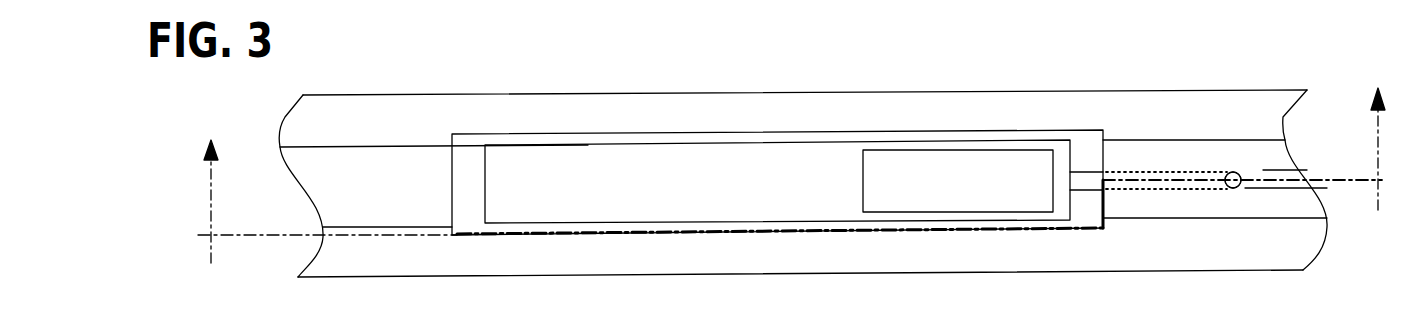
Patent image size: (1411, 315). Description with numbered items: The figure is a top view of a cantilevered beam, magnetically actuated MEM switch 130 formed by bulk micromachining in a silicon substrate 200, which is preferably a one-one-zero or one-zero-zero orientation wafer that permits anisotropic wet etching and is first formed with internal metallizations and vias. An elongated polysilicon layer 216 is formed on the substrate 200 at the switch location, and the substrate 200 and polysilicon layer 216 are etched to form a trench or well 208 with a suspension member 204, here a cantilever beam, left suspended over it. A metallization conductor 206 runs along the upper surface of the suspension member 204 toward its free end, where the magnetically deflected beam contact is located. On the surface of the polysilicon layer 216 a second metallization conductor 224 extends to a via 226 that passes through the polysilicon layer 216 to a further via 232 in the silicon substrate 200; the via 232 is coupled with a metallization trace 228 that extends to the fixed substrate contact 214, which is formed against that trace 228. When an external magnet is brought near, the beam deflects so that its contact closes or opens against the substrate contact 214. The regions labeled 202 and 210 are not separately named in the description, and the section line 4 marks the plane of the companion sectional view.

The MEM switch 130 is at (693, 69).
The silicon substrate 200 is at (281, 122).
The upper housing portion 202 is at (385, 132).
The suspension member 204 is at (763, 132).
The metallization conductor 206 is at (435, 173).
The well 208 is at (1080, 142).
The die 210 is at (915, 170).
The substrate contact 214 is at (865, 6).
The polysilicon layer 216 is at (1175, 160).
The second metallization conductor 224 is at (1263, 170).
The via 226 is at (1238, 172).
The via 232 is at (1233, 180).
The metallization trace 228 is at (1088, 180).
The section line 4- 4 is at (781, 175).